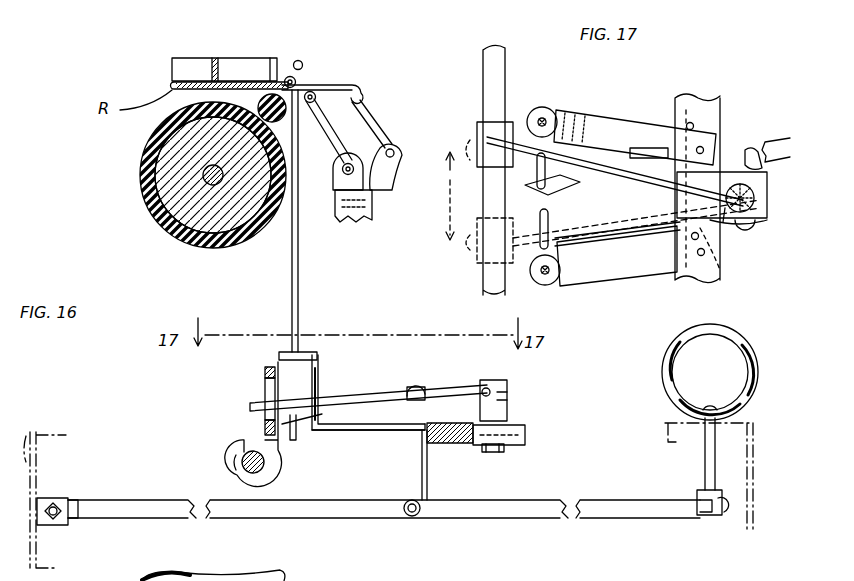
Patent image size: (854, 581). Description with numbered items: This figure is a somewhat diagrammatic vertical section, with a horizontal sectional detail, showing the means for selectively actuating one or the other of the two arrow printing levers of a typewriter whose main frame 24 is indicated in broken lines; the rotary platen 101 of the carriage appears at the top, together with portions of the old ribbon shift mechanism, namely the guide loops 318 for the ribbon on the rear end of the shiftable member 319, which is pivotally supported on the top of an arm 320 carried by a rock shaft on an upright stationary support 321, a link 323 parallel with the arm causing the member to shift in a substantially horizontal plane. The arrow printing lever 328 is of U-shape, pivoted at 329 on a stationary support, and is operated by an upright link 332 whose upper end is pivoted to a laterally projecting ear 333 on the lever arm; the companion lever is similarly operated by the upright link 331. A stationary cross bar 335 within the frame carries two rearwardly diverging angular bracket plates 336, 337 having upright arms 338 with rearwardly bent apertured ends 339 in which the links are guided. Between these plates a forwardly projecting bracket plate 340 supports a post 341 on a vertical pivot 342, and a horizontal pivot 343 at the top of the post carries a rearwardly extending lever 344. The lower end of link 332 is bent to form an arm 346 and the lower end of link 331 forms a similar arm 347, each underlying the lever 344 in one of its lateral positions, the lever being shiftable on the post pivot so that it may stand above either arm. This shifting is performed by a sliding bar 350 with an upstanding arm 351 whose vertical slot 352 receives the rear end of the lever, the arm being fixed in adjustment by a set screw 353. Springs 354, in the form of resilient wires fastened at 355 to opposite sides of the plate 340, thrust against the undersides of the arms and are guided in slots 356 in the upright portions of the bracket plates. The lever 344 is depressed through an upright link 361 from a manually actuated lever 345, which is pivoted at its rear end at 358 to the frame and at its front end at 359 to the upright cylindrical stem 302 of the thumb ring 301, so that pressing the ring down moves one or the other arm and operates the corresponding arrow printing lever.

In FIG. 16, the rotary platen 101 is at (142, 160).
In FIG. 16, the guide loops 318 is at (172, 85).
In FIG. 16, the shiftable member 319 is at (340, 86).
In FIG. 16, the arm 320 is at (366, 140).
In FIG. 16, the upright stationary support 321 is at (372, 213).
In FIG. 16, the link 323 is at (358, 122).
In FIG. 16, the arrow printing lever 328 is at (242, 38).
In FIG. 16, the pivot 329 is at (298, 61).
In FIG. 17, the upright link 331 is at (540, 275).
In FIG. 16, the upright link 332 is at (299, 282).
In FIG. 17, the upright link 332 is at (546, 122).
In FIG. 16, the ears 333 is at (296, 80).
In FIG. 16, the stationary cross bar 335 is at (462, 444).
In FIG. 17, the stationary cross bar 335 is at (722, 112).
In FIG. 17, the angular bracket plate 336 is at (660, 270).
In FIG. 16, the angular bracket plate 337 is at (392, 432).
In FIG. 17, the angular bracket plate 337 is at (638, 128).
In FIG. 16, the upright arms 338 is at (318, 362).
In FIG. 17, the upright arms 338 is at (560, 262).
In FIG. 16, the apertured ends 339 is at (312, 352).
In FIG. 17, the apertured ends 339 is at (548, 288).
In FIG. 16, the bracket plate 340 is at (526, 434).
In FIG. 17, the bracket plate 340 is at (765, 212).
In FIG. 16, the post 341 is at (509, 403).
In FIG. 17, the post 341 is at (755, 200).
In FIG. 16, the vertical pivot 342 is at (502, 451).
In FIG. 16, the horizontal pivot 343 is at (508, 390).
In FIG. 17, the horizontal pivot 343 is at (732, 235).
In FIG. 16, the lever 344 is at (458, 390).
In FIG. 17, the lever 344 is at (525, 170).
In FIG. 16, the manually actuated lever 345 is at (594, 505).
In FIG. 17, the manually actuated lever 345 is at (768, 145).
In FIG. 16, the arm 346 is at (293, 440).
In FIG. 17, the arm 346 is at (546, 168).
In FIG. 17, the arm 347 is at (550, 225).
In FIG. 16, the sliding bar 350 is at (276, 462).
In FIG. 17, the sliding bar 350 is at (483, 55).
In FIG. 16, the upstanding arm 351 is at (265, 372).
In FIG. 17, the upstanding arm 351 is at (477, 262).
In FIG. 16, the vertical slot 352 is at (265, 396).
In FIG. 16, the set screw 353 is at (240, 460).
In FIG. 16, the springs 354 is at (380, 398).
In FIG. 17, the springs 354 is at (616, 248).
In FIG. 17, the fastening point 355 is at (748, 158).
In FIG. 16, the slots 356 is at (322, 373).
In FIG. 16, the pivot 358 is at (62, 525).
In FIG. 16, the pivot 359 is at (718, 516).
In FIG. 16, the upright link 361 is at (420, 455).
In FIG. 17, the upright link 361 is at (649, 146).
In FIG. 16, the thumb engaging element 301 is at (748, 352).
In FIG. 16, the upright cylindrical stem 302 is at (705, 452).
In FIG. 16, the main frame 24 is at (753, 478).